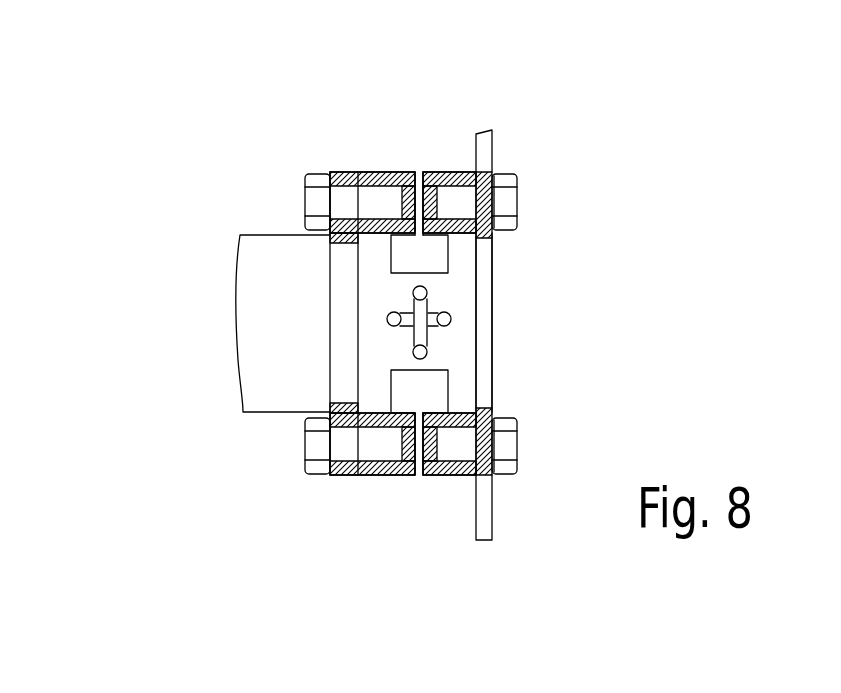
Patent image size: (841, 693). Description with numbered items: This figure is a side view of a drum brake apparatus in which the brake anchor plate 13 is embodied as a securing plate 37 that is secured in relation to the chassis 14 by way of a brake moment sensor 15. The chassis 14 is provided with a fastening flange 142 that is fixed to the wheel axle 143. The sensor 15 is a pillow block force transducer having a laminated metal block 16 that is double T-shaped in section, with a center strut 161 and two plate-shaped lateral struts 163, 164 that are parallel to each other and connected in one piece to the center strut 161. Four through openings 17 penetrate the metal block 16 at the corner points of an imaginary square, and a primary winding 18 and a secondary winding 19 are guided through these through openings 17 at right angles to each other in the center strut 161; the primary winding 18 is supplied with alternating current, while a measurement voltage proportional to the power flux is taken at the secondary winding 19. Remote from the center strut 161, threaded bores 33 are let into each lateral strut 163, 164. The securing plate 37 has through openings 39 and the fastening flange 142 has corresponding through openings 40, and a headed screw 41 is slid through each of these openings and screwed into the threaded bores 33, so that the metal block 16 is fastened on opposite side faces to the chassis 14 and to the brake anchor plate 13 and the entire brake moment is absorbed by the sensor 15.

The brake anchor plate 13 is at (500, 138).
The chassis 14 is at (240, 442).
The brake moment sensor 15 is at (416, 490).
The metal block 16 is at (466, 342).
The through openings 17 is at (387, 321).
The primary winding 18 is at (428, 306).
The secondary winding 19 is at (412, 344).
The threaded bores 33 is at (386, 180).
The securing plate 37 is at (482, 328).
The through openings 39 is at (512, 182).
The through openings 40 is at (356, 183).
The headed screw 41 is at (317, 198).
The fastening flange 142 is at (343, 262).
The wheel axle 143 is at (250, 341).
The center strut 161 is at (442, 362).
The lateral strut 163 is at (458, 249).
The lateral strut 164 is at (373, 292).